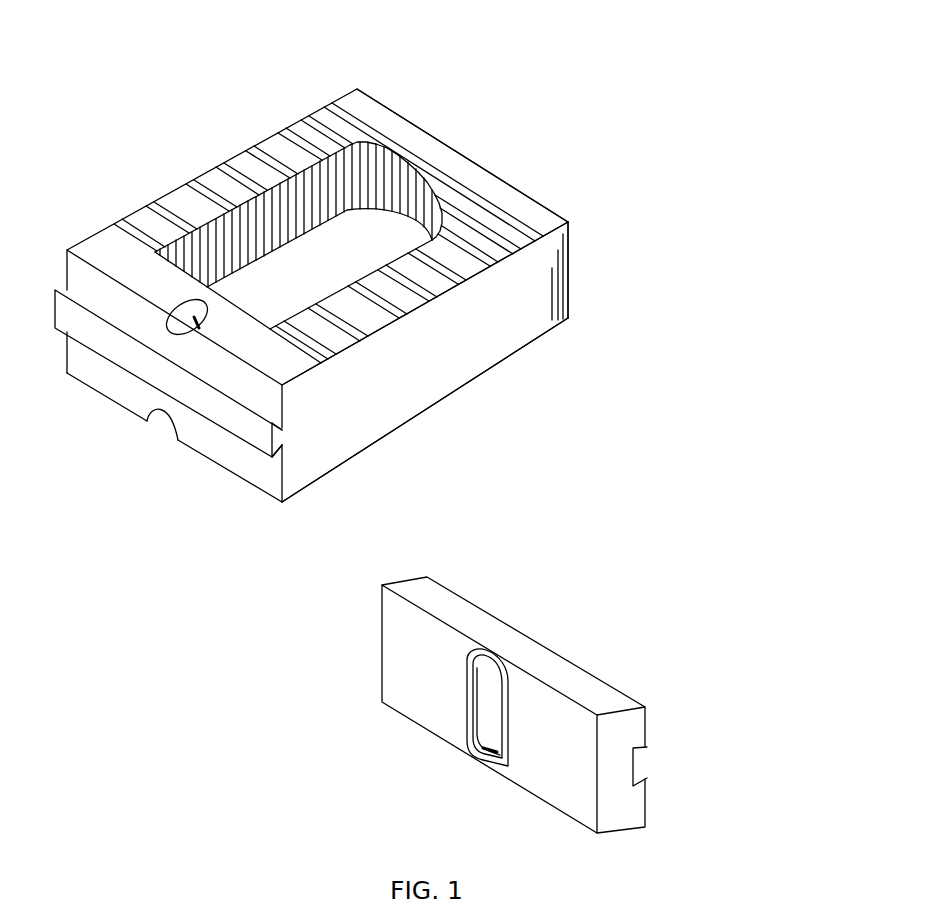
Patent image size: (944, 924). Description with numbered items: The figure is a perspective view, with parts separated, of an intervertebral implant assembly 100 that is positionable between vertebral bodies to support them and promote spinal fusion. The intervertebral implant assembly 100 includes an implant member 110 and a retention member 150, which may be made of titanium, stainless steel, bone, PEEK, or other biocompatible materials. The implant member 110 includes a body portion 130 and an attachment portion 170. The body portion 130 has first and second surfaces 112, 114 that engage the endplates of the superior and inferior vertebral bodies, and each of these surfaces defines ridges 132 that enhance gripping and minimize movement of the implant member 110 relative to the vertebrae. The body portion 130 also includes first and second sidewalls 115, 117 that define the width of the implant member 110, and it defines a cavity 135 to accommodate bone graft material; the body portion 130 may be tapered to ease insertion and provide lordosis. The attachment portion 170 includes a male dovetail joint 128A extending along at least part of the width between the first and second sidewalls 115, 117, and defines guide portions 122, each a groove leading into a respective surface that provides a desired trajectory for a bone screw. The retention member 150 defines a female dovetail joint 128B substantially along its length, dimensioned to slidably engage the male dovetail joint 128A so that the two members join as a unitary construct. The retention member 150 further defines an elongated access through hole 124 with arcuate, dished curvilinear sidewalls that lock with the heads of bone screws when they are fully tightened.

The intervertebral implant assembly 100 is at (171, 590).
The implant member 110 is at (653, 227).
The first surface 112 is at (375, 320).
The second surface 114 is at (392, 438).
The first sidewall 115 is at (486, 318).
The second sidewall 117 is at (262, 214).
The guide portion 122 is at (181, 327).
The access through hole 124 is at (490, 718).
The male dovetail joint 128A is at (273, 437).
The female dovetail joint 128B is at (642, 764).
The body portion 130 is at (568, 277).
The ridges 132 is at (350, 112).
The cavity 135 is at (293, 267).
The retention member 150 is at (722, 785).
The attachment portion 170 is at (243, 461).